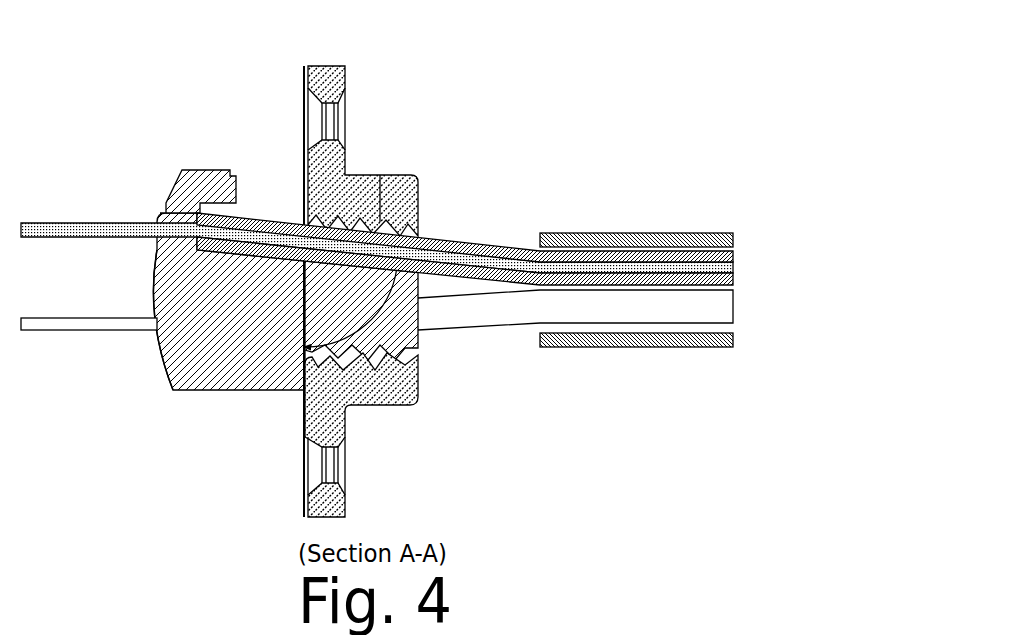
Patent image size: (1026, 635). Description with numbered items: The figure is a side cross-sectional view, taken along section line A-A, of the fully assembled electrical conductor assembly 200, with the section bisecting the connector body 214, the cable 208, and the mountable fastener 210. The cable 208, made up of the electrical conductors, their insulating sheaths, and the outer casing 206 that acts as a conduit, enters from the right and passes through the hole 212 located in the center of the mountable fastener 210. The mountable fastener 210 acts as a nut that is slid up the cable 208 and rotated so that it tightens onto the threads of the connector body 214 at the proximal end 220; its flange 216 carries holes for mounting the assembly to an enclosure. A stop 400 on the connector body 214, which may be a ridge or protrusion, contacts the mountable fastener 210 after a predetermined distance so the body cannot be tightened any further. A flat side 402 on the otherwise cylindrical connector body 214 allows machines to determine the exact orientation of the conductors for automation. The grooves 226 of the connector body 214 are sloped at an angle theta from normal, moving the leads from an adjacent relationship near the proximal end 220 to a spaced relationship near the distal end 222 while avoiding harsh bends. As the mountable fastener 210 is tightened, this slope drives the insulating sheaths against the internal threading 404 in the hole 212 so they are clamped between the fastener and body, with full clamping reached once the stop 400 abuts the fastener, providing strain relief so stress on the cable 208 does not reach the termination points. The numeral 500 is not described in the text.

The electrical conductor assembly 200 is at (389, 275).
The outer casing 206 is at (672, 348).
The cable 208 is at (588, 303).
The mountable fastener 210 is at (341, 278).
The hole 212 is at (418, 222).
The connector body 214 is at (259, 325).
The flange 216 is at (345, 70).
The proximal end 220 is at (421, 347).
The distal end 222 is at (156, 349).
The grooves 226 is at (290, 248).
The stop 400 is at (303, 395).
The flat side 402 is at (203, 392).
The internal threading 404 is at (382, 176).
The assembly 500 is at (640, 634).